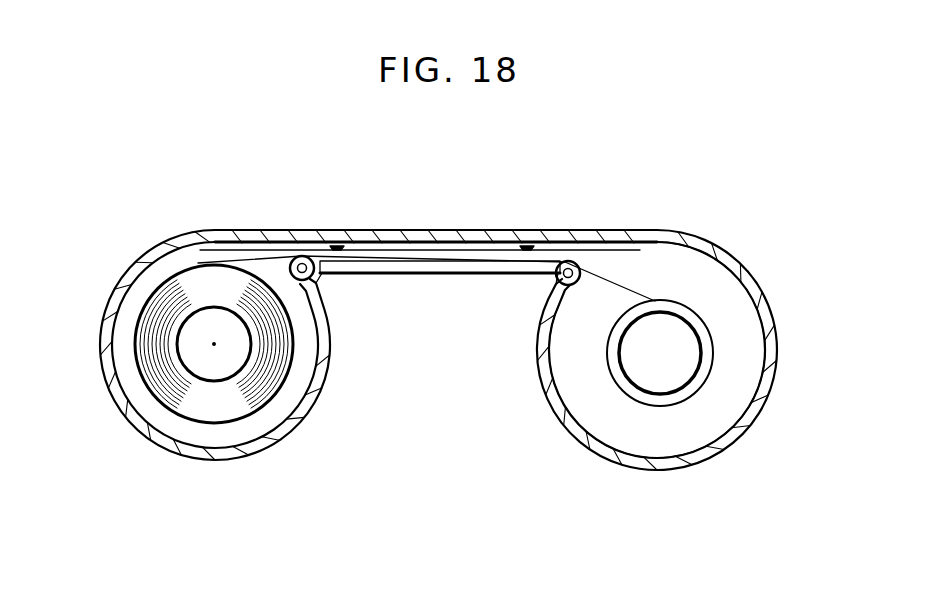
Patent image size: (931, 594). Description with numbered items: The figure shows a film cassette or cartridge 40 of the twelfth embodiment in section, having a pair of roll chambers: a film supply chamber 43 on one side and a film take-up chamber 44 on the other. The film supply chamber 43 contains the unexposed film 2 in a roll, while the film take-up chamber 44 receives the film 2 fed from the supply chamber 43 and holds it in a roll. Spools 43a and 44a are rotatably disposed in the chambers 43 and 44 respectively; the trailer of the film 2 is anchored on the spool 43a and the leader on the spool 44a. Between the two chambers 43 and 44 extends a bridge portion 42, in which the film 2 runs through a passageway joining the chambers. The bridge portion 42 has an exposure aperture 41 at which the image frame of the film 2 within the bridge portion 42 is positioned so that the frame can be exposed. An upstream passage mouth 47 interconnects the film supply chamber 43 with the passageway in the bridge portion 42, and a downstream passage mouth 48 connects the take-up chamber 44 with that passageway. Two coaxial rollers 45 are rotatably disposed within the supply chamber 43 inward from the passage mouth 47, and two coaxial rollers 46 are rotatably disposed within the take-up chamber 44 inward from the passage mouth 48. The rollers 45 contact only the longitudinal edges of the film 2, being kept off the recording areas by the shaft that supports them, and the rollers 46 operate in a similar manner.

The film 2 is at (255, 249).
The cassette 40 is at (622, 222).
The exposure aperture 41 is at (516, 276).
The bridge portion 42 is at (427, 243).
The film supply chamber 43 is at (192, 240).
The spool 43a is at (210, 365).
The film take-up chamber 44 is at (728, 308).
The spool 44a is at (666, 382).
The rollers 45 is at (302, 255).
The rollers 46 is at (569, 244).
The upstream passage mouth 47 is at (350, 244).
The downstream passage mouth 48 is at (524, 244).